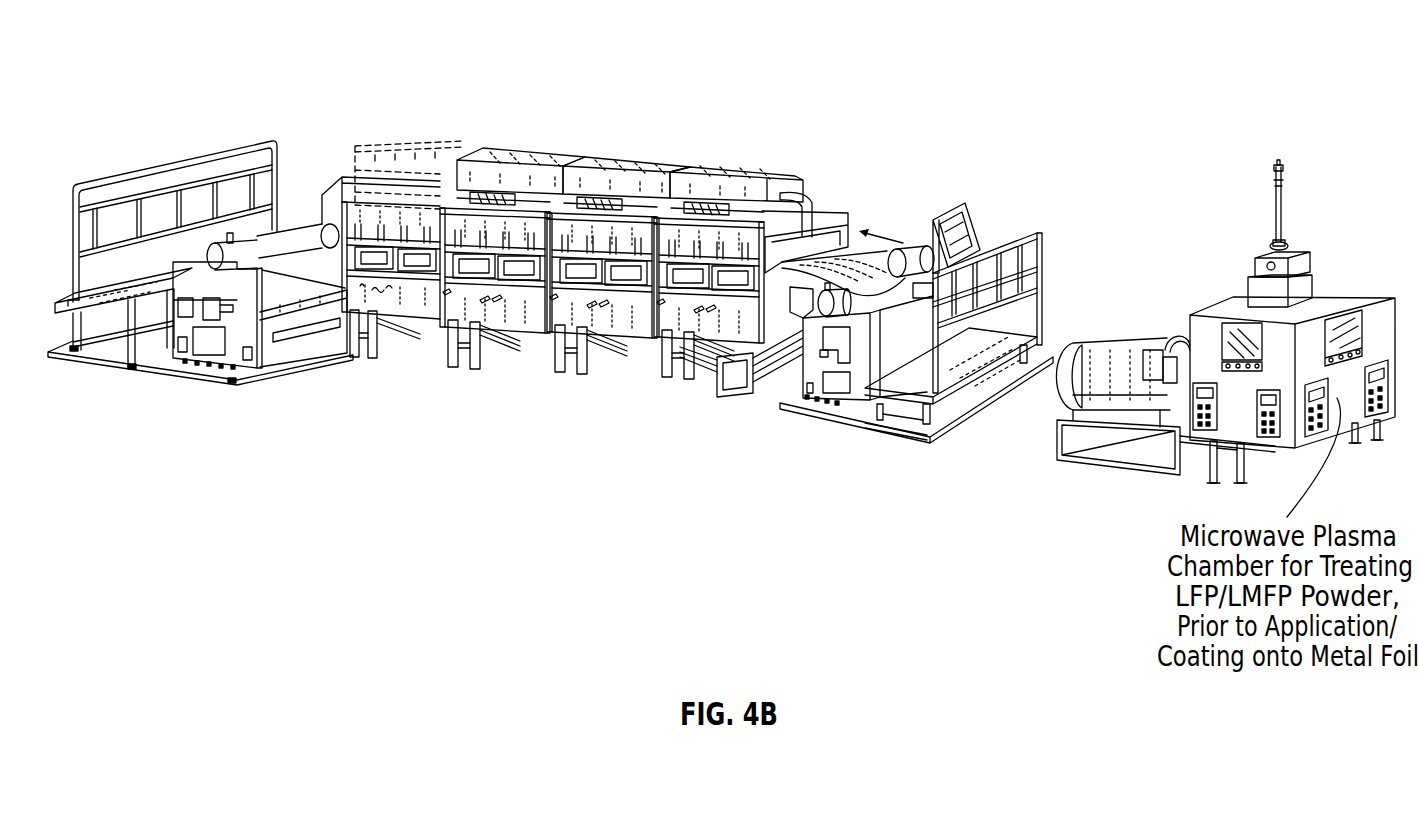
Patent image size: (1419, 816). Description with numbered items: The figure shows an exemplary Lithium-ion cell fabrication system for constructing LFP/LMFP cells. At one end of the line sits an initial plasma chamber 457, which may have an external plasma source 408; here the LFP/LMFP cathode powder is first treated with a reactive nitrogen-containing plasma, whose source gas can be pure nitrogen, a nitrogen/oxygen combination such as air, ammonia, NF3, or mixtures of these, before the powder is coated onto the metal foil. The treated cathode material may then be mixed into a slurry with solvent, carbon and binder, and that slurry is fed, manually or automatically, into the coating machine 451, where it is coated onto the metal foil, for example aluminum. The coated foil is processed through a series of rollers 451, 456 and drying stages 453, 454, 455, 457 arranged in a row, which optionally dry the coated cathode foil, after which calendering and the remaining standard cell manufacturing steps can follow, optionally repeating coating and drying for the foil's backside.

The external plasma source 408 is at (1277, 216).
The coating machine 451 is at (943, 196).
The drying stage 453 is at (753, 172).
The drying stage 454 is at (645, 162).
The drying stage 455 is at (539, 153).
The roller 456 is at (233, 138).
The plasma chamber 457 is at (436, 146).